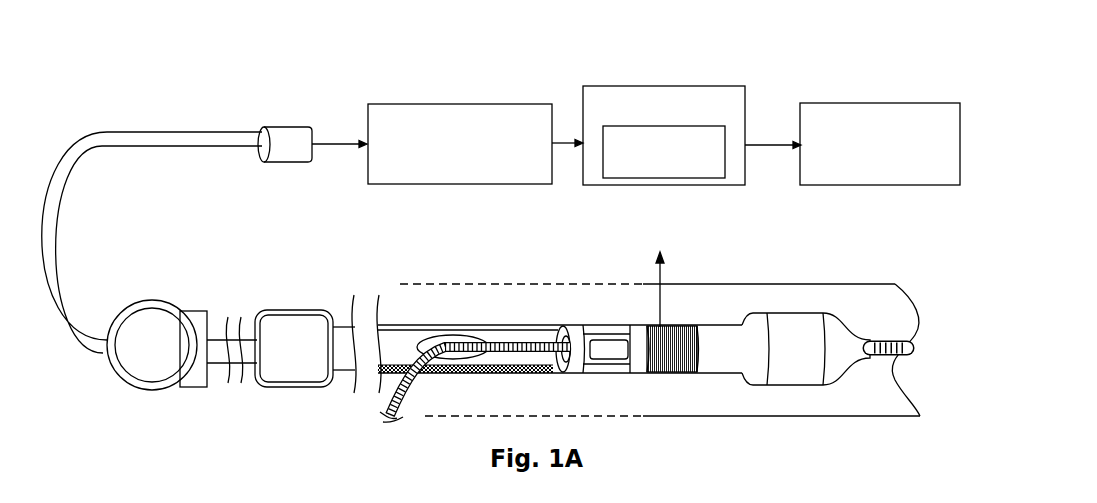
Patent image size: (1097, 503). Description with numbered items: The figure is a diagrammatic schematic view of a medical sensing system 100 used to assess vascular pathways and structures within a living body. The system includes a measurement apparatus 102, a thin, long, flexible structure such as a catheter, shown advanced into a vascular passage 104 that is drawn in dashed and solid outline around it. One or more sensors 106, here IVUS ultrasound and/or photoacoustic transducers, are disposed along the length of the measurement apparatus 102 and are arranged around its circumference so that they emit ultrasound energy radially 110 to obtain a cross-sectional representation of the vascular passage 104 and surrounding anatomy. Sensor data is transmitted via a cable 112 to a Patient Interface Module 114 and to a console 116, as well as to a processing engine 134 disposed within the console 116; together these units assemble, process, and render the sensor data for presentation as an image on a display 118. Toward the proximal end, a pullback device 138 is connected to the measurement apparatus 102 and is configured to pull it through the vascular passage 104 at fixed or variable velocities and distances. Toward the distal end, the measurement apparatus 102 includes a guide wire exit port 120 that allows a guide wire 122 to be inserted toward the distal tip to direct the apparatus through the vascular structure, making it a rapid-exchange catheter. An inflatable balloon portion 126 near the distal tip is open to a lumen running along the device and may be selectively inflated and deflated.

The medical sensing system 100 is at (566, 66).
The measurement apparatus 102 is at (843, 266).
The vascular passage 104 is at (740, 416).
The sensors 106 is at (668, 327).
The radially emitted ultrasound energy 110 is at (663, 263).
The cable 112 is at (540, 375).
The Patient Interface Module 114 is at (428, 104).
The console 116 is at (638, 86).
The display 118 is at (852, 103).
The guide wire exit port 120 is at (433, 325).
The guide wire 122 is at (882, 357).
The inflatable balloon portion 126 is at (773, 313).
The processing engine 134 is at (640, 178).
The pullback device 138 is at (150, 390).